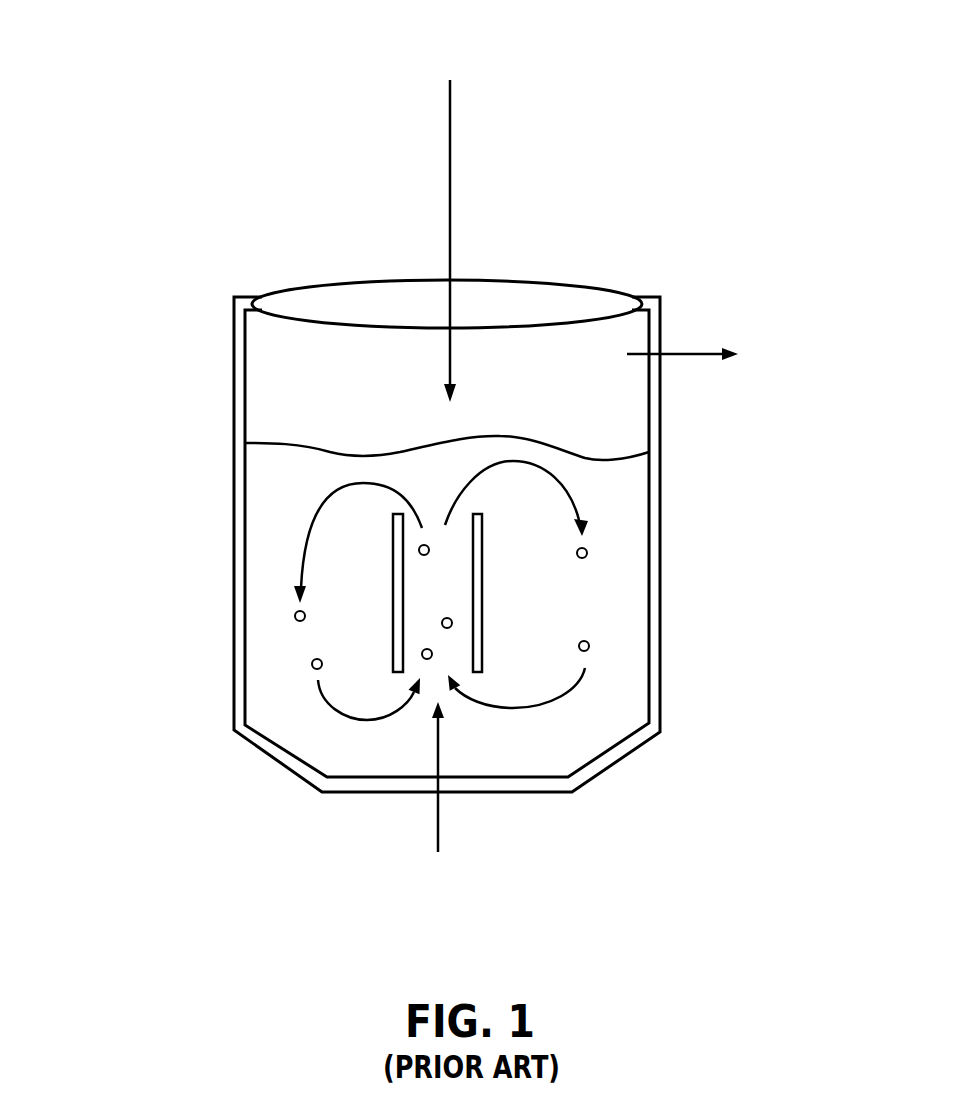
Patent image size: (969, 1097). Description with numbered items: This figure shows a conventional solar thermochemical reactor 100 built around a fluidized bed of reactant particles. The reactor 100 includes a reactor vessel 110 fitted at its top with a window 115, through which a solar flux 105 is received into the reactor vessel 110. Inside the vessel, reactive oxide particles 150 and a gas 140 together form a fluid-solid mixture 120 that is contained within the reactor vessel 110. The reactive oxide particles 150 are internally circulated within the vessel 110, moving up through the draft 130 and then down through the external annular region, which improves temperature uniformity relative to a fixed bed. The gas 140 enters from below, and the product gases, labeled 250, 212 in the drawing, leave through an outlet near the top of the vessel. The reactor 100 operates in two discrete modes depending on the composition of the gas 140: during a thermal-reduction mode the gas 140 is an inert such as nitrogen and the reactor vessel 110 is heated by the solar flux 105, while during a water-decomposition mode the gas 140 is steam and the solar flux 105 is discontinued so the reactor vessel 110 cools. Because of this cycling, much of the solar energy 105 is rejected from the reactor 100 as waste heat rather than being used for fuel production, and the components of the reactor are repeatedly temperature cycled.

The solar thermochemical reactor 100 is at (126, 183).
The solar flux 105 is at (452, 185).
The reactor vessel 110 is at (235, 405).
The window 115 is at (317, 292).
The fluid-solid mixture 120 is at (267, 625).
The draft 130 is at (480, 603).
The gas 140 is at (437, 822).
The reactive oxide particles 150 is at (587, 637).
The H2, O2 product gas outlet 250 is at (690, 357).
The H2, O2 product gas stream 212 is at (719, 355).